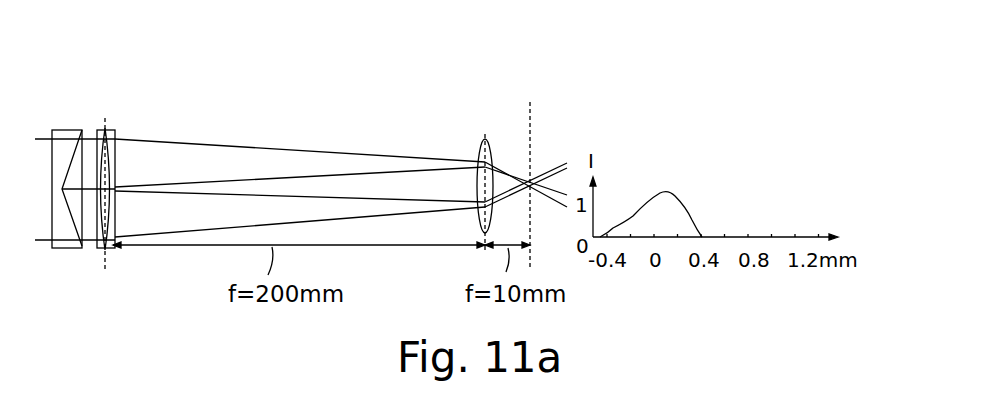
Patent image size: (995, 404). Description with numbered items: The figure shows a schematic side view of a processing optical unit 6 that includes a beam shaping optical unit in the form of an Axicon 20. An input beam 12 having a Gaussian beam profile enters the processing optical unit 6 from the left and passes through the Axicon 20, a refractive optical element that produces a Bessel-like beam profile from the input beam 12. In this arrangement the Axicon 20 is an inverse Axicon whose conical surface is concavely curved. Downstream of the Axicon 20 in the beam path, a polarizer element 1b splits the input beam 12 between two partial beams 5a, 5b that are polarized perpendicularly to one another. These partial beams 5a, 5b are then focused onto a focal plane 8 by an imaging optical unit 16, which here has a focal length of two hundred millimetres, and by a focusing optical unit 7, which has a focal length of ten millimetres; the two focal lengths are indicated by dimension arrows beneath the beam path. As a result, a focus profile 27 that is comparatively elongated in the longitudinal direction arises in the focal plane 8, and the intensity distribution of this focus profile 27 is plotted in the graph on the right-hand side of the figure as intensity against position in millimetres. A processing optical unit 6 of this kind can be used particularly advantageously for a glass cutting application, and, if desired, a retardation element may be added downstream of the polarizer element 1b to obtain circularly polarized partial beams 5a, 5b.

The processing optical unit 6 is at (87, 139).
The input beam 12 is at (38, 140).
The Axicon 20 is at (60, 136).
The polarizer element 1b is at (95, 132).
The imaging optical unit 16 is at (112, 140).
The partial beam 5a is at (237, 147).
The partial beam 5b is at (341, 200).
The focusing optical unit 7 is at (477, 143).
The focal plane 8 is at (528, 126).
The focus profile 27 is at (544, 165).